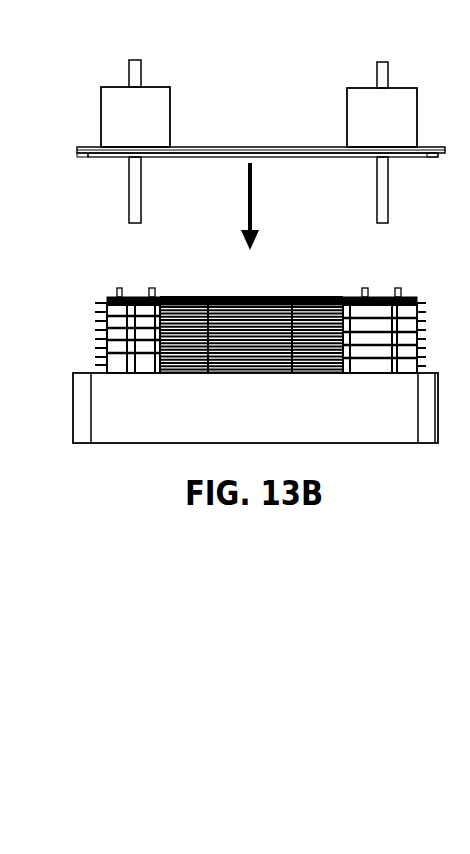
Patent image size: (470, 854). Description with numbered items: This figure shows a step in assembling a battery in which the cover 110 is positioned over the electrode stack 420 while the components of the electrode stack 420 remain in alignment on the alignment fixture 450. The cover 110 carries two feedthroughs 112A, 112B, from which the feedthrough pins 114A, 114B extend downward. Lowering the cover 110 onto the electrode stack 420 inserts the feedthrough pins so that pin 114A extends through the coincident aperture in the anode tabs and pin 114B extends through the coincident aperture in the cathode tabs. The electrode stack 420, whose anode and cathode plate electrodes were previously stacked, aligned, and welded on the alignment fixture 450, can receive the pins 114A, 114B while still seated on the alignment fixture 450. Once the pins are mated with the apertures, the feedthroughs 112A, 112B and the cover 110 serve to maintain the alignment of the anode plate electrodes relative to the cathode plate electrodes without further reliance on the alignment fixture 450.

The cover 110 is at (217, 147).
The feedthrough 112A is at (135, 103).
The feedthrough 112B is at (382, 104).
The feedthrough pin 114A is at (133, 182).
The feedthrough pin 114B is at (385, 182).
The electrode stack 420 is at (66, 337).
The alignment fixture 450 is at (270, 418).